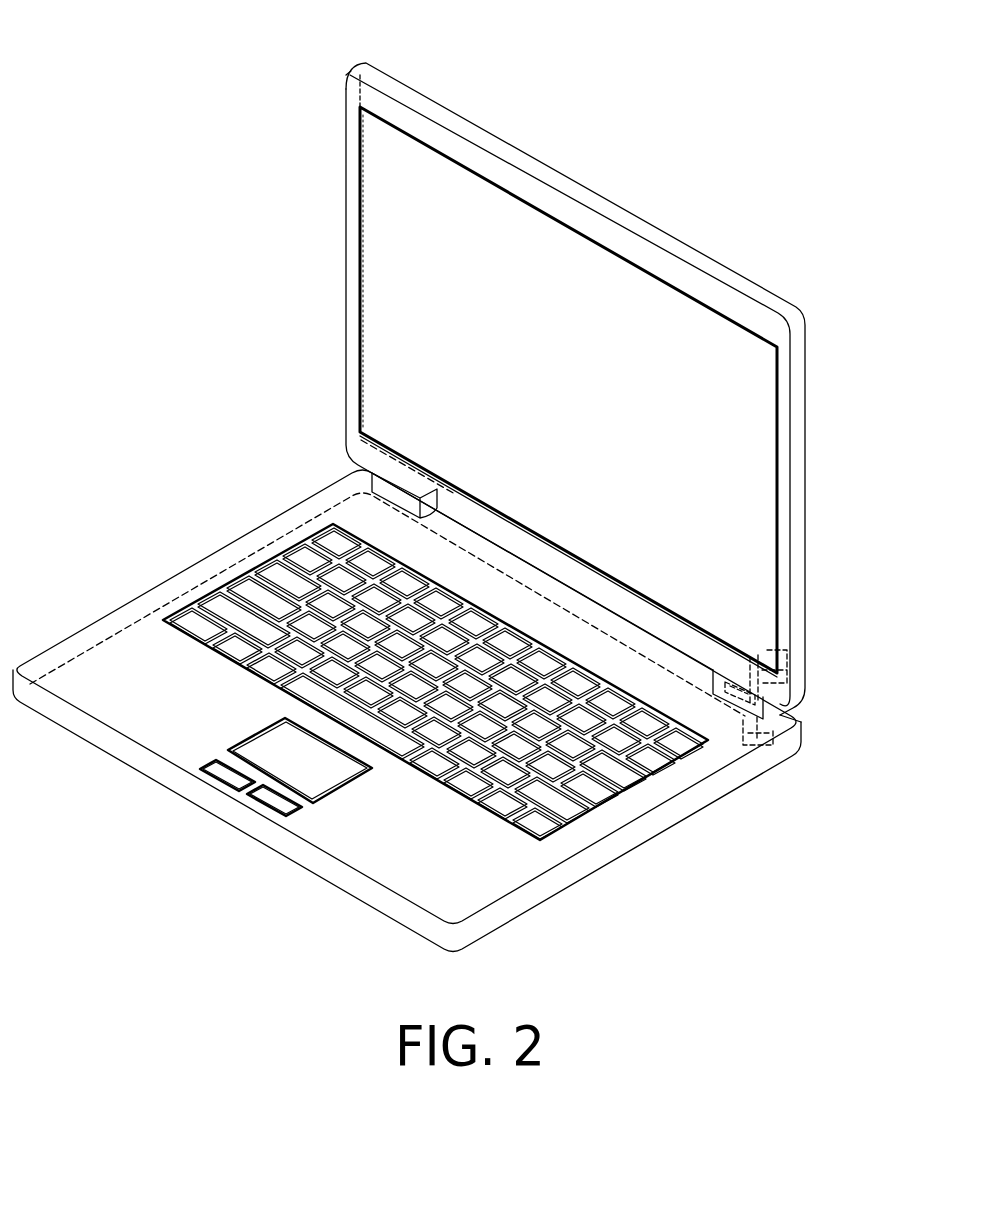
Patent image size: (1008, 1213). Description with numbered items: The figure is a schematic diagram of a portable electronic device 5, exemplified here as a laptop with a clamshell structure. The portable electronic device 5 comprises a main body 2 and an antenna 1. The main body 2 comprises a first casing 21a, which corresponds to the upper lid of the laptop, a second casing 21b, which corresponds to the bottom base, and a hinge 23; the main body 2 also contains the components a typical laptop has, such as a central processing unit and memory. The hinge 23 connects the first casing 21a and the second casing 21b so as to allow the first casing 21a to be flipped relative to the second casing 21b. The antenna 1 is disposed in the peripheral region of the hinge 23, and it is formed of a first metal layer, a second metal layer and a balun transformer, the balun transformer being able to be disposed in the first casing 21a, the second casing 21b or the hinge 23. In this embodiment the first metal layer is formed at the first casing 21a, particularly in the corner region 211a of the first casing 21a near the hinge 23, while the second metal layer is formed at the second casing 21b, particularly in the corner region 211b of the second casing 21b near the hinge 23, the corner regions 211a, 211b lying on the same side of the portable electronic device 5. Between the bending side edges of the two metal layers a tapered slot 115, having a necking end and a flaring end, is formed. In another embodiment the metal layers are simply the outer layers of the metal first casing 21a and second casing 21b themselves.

The portable electronic device 5 is at (114, 47).
The main body 2 is at (828, 306).
The first casing 21a is at (797, 343).
The second casing 21b is at (648, 834).
The antenna 1 is at (733, 666).
The hinge 23 is at (716, 695).
The corner region of the first casing 211a is at (792, 679).
The corner region of the second casing 211b is at (793, 758).
The tapered slot 115 is at (815, 715).